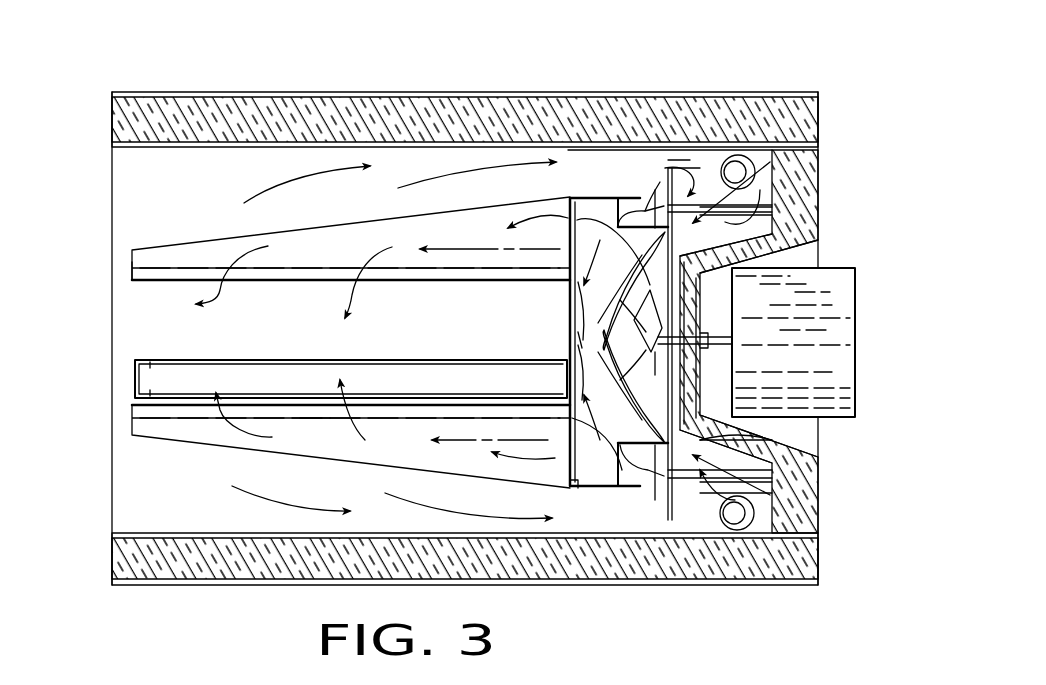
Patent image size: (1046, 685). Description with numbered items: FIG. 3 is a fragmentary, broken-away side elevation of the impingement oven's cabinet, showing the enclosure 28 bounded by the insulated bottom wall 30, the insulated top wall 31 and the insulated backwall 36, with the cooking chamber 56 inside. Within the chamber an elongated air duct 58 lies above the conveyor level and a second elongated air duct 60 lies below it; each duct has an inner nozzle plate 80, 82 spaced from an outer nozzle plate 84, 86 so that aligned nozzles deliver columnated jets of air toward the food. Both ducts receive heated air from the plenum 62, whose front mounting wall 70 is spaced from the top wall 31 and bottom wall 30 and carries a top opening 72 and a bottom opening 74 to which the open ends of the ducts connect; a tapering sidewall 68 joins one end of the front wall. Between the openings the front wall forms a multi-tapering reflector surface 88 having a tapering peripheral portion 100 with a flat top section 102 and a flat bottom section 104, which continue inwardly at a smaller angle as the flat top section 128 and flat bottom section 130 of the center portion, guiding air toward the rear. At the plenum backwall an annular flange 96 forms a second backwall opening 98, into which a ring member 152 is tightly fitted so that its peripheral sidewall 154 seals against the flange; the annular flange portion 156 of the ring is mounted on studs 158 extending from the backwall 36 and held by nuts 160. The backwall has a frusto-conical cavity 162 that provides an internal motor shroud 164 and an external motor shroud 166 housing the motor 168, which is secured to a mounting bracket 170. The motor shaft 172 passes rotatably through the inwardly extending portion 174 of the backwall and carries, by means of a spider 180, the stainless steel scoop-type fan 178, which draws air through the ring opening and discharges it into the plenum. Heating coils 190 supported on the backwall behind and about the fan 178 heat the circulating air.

The enclosure 28 is at (108, 104).
The insulated bottom wall 30 is at (165, 587).
The insulated top wall 31 is at (338, 93).
The insulated backwall 36 is at (818, 164).
The cooking chamber 56 is at (278, 334).
The elongated air duct 58 is at (178, 257).
The elongated air duct 60 is at (190, 433).
The plenum 62 is at (574, 199).
The tapering sidewall 68 is at (577, 495).
The front mounting wall 70 is at (568, 200).
The top opening 72 is at (568, 268).
The bottom opening 74 is at (574, 478).
The inner nozzle plate 80 is at (283, 268).
The inner nozzle plate 82 is at (293, 423).
The outer nozzle plate 84 is at (163, 283).
The outer nozzle plate 86 is at (283, 432).
The multi-tapering reflector surface 88 is at (588, 276).
The annular flange 96 is at (655, 215).
The second backwall opening 98 is at (616, 200).
The tapering peripheral portion 100 is at (590, 392).
The flat top section 102 is at (578, 292).
The flat bottom section 104 is at (557, 383).
The flat top section 128 is at (576, 340).
The flat bottom section 130 is at (576, 348).
The ring member 152 is at (650, 432).
The peripheral sidewall 154 is at (653, 202).
The annular flange portion 156 is at (677, 213).
The studs 158 is at (705, 208).
The nuts 160 is at (668, 200).
The cavity 162 is at (822, 247).
The internal motor shroud 164 is at (730, 442).
The external motor shroud 166 is at (760, 432).
The motor 168 is at (840, 330).
The mounting bracket 170 is at (812, 262).
The motor shaft 172 is at (705, 340).
The inwardly extending portion 174 is at (700, 302).
The scoop-type fan 178 is at (700, 382).
The spider 180 is at (612, 384).
The heating coils 190 is at (742, 155).